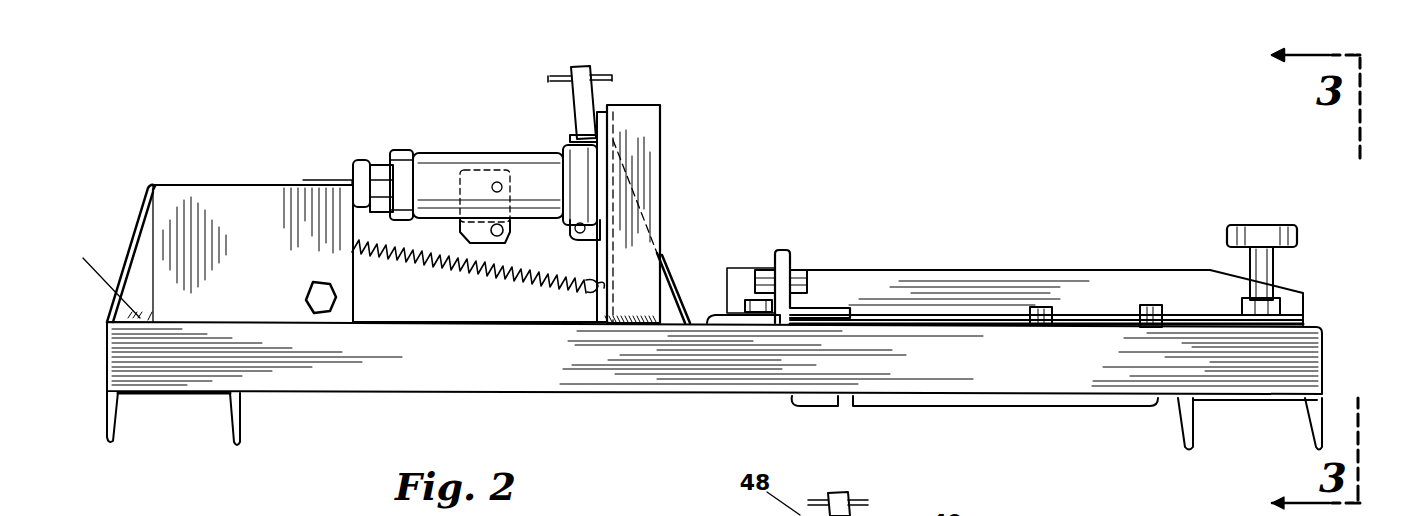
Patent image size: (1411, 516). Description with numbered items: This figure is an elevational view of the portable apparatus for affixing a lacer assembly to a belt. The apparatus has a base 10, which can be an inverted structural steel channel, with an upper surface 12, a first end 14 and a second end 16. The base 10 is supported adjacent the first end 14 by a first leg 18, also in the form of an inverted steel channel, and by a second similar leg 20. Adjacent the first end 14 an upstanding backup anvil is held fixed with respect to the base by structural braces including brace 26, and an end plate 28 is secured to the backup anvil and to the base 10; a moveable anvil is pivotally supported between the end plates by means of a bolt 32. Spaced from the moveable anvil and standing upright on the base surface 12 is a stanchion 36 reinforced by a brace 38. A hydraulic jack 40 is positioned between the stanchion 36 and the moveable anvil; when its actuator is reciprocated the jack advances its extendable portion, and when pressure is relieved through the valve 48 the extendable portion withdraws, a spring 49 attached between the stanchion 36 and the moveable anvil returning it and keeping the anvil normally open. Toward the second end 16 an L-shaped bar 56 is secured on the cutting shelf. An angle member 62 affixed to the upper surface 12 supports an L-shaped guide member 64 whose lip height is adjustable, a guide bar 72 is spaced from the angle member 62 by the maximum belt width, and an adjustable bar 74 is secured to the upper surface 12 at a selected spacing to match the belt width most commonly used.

The base 10 is at (729, 378).
The upper surface 12 is at (477, 323).
The first end 14 is at (107, 375).
The second end 16 is at (1322, 360).
The first leg 18 is at (232, 413).
The second leg 20 is at (1183, 418).
The structural brace 26 is at (133, 240).
The end plate 28 is at (262, 205).
The bolt 32 is at (318, 297).
The stanchion 36 is at (647, 128).
The brace 38 is at (668, 270).
The jack 40 is at (493, 157).
The valve 48 is at (583, 97).
The spring 49 is at (447, 273).
The bar 56 is at (923, 285).
The angle member 62 is at (777, 300).
The guide member 64 is at (788, 260).
The guide bar 72 is at (1148, 317).
The adjustable bar 74 is at (1053, 312).